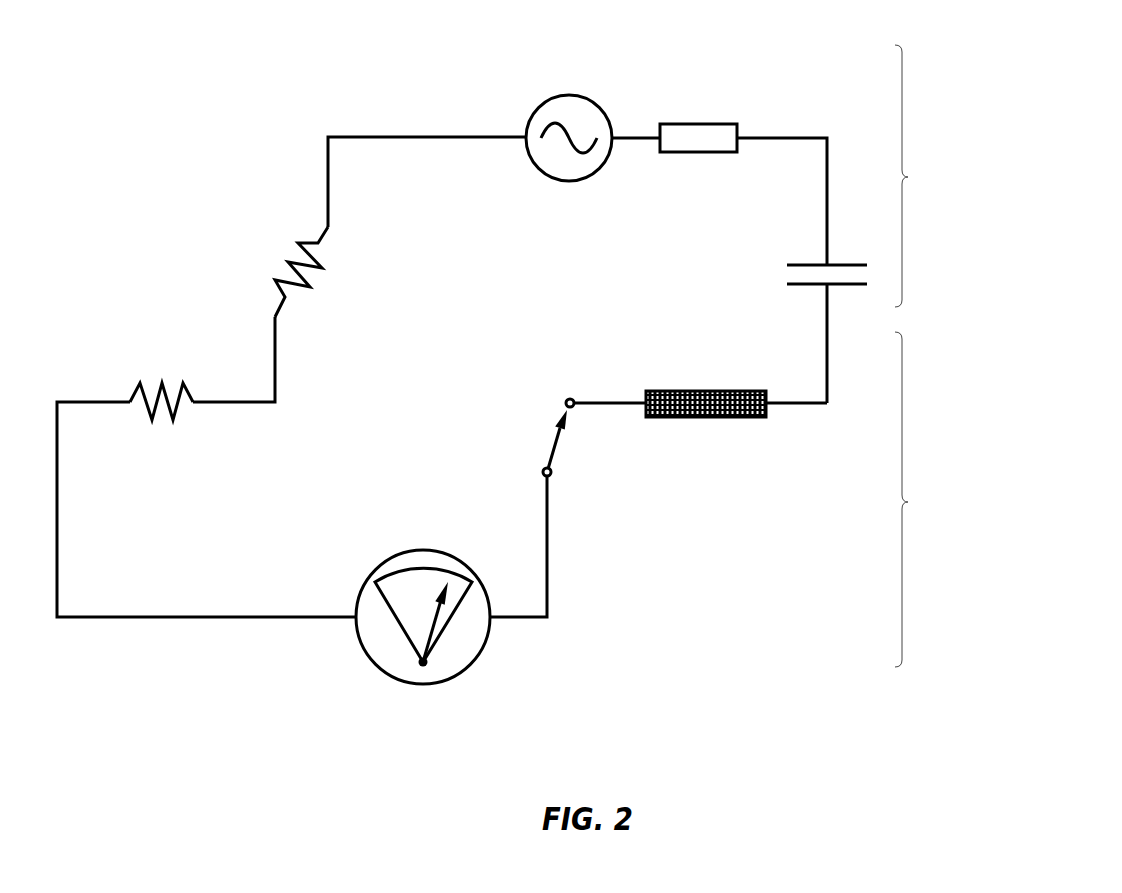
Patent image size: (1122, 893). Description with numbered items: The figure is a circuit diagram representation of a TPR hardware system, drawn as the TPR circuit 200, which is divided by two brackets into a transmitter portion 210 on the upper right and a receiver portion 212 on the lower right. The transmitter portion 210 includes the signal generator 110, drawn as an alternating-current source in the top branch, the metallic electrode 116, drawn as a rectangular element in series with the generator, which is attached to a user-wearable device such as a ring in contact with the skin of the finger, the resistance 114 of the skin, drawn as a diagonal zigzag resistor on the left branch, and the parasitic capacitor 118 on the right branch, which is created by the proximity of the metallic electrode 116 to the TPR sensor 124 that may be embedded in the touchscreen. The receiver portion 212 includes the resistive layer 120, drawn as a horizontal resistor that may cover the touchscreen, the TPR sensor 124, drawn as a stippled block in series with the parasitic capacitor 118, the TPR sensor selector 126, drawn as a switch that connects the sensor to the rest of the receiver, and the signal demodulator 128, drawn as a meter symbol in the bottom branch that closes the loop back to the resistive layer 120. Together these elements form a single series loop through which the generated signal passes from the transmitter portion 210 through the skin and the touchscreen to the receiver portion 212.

The TPR circuit 200 is at (222, 74).
The signal generator 110 is at (557, 95).
The metallic electrode 116 is at (702, 124).
The parasitic capacitor 118 is at (805, 264).
The resistance of the skin 114 is at (268, 254).
The resistive layer 120 is at (143, 378).
The TPR sensor 124 is at (710, 391).
The TPR sensor selector 126 is at (520, 423).
The signal demodulator 128 is at (381, 668).
The transmitter portion 210 is at (1025, 226).
The receiver portion 212 is at (1025, 546).